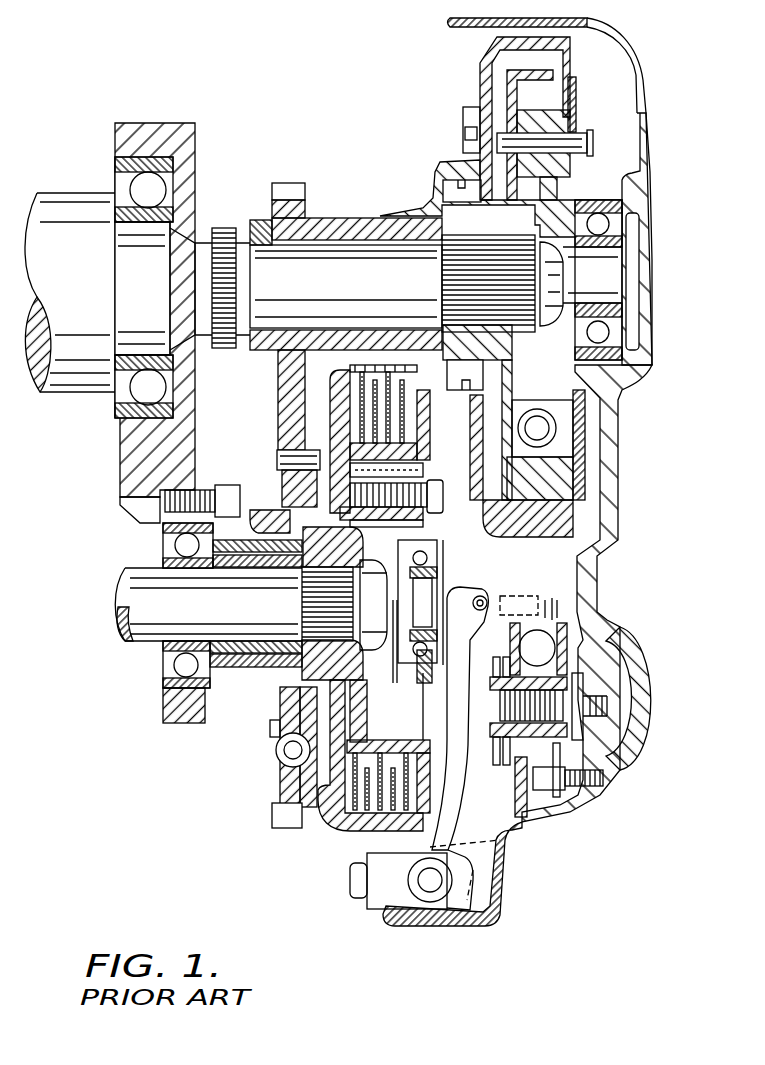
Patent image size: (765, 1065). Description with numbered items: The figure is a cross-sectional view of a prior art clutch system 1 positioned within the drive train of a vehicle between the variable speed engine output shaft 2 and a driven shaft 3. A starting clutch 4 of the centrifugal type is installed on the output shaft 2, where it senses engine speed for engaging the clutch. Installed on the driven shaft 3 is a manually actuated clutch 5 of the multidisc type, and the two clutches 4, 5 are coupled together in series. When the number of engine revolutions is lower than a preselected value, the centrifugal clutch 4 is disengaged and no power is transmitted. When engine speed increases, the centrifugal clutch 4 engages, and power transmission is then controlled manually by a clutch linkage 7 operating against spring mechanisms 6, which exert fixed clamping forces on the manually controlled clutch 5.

The clutch system 1 is at (106, 779).
The engine output shaft 2 is at (355, 268).
The driven shaft 3 is at (142, 600).
The starting clutch 4 is at (600, 117).
The manually actuated clutch 5 is at (318, 855).
The spring mechanisms 6 is at (430, 528).
The clutch linkage 7 is at (470, 808).